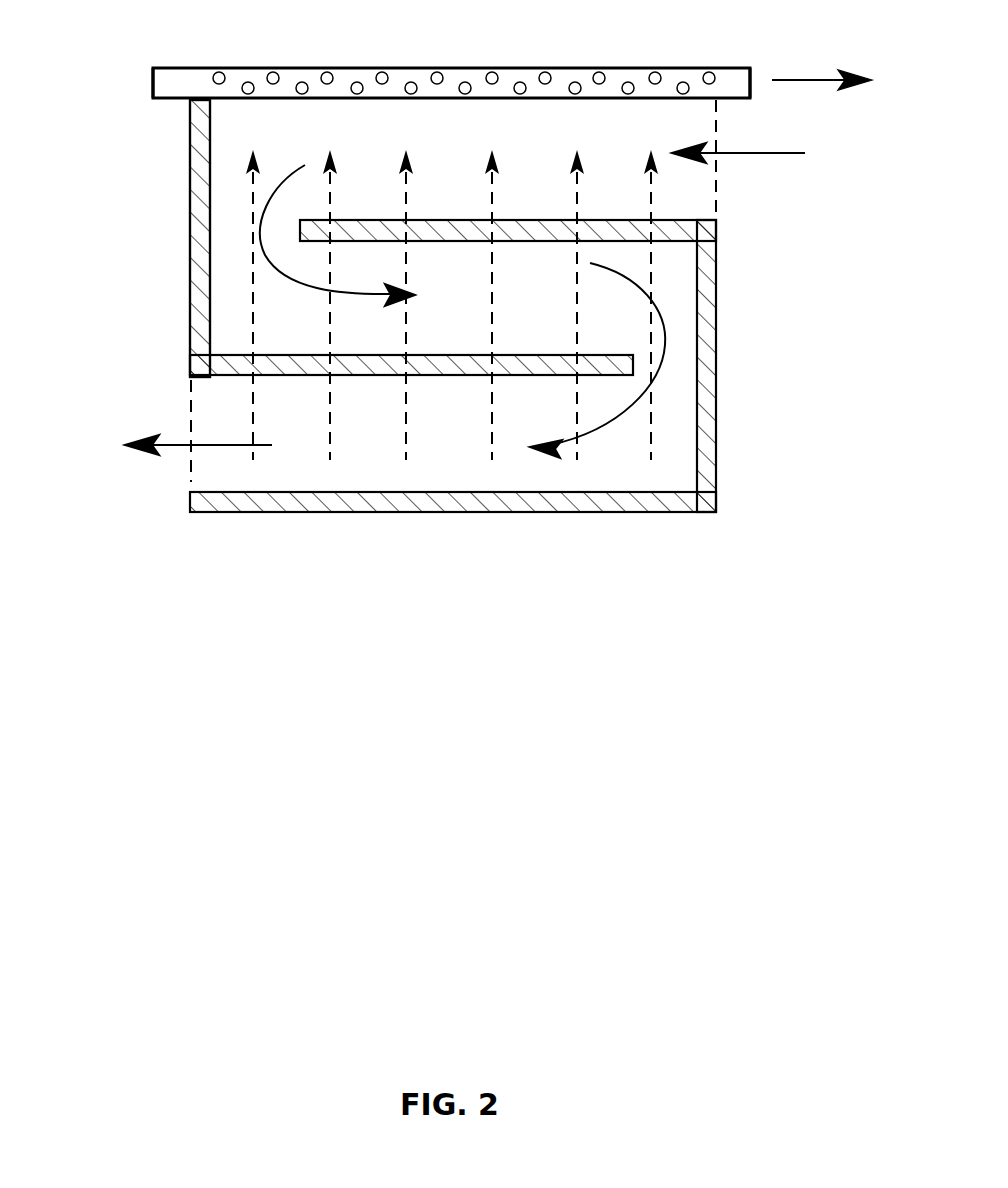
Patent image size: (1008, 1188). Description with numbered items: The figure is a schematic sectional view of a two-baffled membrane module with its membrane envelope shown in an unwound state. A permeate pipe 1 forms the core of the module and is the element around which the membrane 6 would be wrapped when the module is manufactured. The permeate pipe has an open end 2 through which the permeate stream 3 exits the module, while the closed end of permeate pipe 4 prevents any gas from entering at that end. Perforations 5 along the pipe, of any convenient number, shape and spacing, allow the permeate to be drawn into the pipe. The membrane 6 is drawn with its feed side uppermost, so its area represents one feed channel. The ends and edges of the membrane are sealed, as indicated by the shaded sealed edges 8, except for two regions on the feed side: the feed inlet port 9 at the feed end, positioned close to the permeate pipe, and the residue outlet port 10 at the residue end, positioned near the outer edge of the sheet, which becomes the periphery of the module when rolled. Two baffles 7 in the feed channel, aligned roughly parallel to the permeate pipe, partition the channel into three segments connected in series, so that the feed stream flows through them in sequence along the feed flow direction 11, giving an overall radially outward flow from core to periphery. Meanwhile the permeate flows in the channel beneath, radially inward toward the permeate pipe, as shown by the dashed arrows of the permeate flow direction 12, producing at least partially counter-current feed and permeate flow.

The permeate pipe 1 is at (173, 68).
The open end of permeate pipe 2 is at (743, 64).
The permeate stream 3 is at (833, 82).
The closed end of permeate pipe 4 is at (152, 82).
The perforations 5 is at (388, 77).
The membrane 6 is at (227, 228).
The baffle in feed channel 7 is at (237, 356).
The sealed edges 8 is at (193, 292).
The feed inlet port 9 is at (716, 170).
The residue outlet port 10 is at (190, 482).
The feed flow direction 11 is at (465, 305).
The permeate flow direction 12 is at (452, 291).